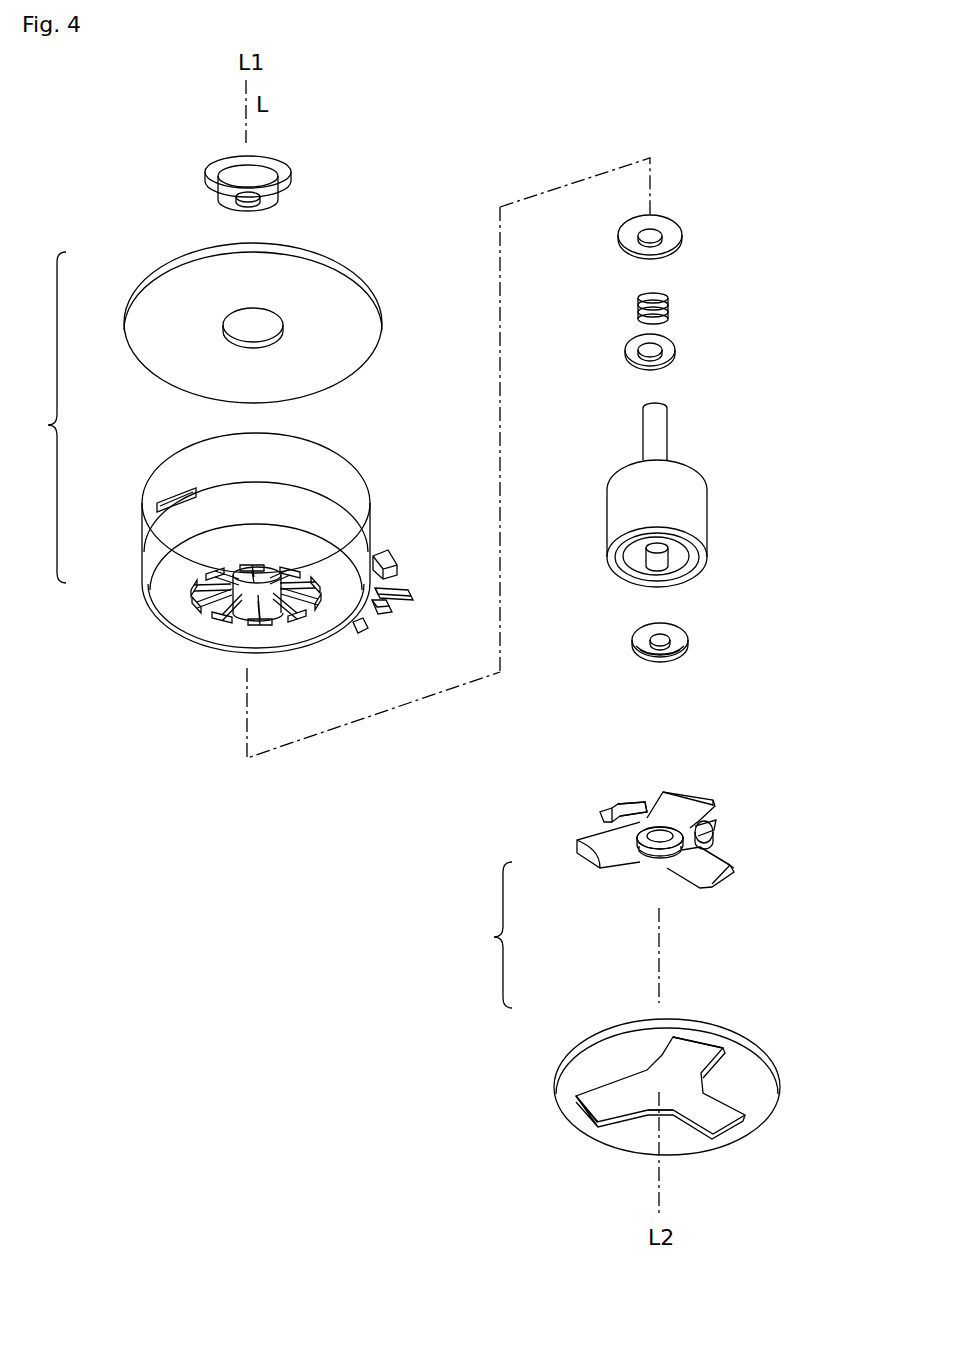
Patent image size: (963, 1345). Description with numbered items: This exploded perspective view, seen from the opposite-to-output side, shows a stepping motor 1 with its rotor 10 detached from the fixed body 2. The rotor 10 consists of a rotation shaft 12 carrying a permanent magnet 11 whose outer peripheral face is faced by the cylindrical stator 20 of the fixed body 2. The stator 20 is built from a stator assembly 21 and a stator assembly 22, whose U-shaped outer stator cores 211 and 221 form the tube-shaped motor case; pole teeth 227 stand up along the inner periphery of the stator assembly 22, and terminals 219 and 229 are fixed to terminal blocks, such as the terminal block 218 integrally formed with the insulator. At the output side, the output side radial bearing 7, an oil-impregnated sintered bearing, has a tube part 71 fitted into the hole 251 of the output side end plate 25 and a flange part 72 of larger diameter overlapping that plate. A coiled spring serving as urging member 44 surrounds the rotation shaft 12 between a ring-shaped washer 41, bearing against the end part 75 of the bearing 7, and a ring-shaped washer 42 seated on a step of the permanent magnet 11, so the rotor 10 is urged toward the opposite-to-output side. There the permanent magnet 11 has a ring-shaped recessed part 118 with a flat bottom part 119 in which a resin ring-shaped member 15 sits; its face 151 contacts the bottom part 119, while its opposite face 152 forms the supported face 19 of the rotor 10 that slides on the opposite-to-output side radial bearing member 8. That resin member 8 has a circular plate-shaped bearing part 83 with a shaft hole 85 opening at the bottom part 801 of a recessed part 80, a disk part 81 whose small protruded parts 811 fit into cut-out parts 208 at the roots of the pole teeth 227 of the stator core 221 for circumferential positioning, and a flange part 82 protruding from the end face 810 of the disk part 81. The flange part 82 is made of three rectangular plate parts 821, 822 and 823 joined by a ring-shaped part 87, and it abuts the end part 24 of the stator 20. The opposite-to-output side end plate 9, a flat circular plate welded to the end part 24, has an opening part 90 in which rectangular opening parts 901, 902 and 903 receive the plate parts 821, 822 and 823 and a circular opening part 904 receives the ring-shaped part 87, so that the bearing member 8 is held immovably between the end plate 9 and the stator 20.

The stepping motor 1 is at (658, 126).
The fixed body 2 is at (270, 630).
The output side radial bearing 7 is at (198, 205).
The flange part 72 is at (222, 168).
The tube part 71 is at (275, 180).
The end part 75 is at (266, 205).
The output side end plate 25 is at (221, 340).
The hole 251 is at (230, 342).
The stator 20 is at (266, 557).
The stator assembly 21 is at (233, 493).
The stator assembly 22 is at (285, 592).
The stator core 211 is at (300, 472).
The stator core 221 is at (335, 522).
The terminal block 218 is at (392, 556).
The terminal 219 is at (413, 597).
The terminal 229 is at (381, 614).
The end part 24 is at (168, 592).
The pole teeth 227 is at (245, 608).
The cut-out part 208 is at (278, 630).
The ring-shaped washer 41 is at (684, 234).
The urging member 44 is at (670, 306).
The ring-shaped washer 42 is at (678, 350).
The rotor 10 is at (680, 554).
The rotation shaft 12 is at (668, 420).
The permanent magnet 11 is at (662, 551).
The ring-shaped recessed part 118 is at (640, 573).
The bottom part 119 is at (636, 556).
The ring-shaped member 15 is at (702, 645).
The face 151 is at (672, 627).
The face 152 is at (676, 656).
The supported face 19 is at (660, 650).
The opposite-to-output side radial bearing member 8 is at (648, 846).
The recessed part 80 is at (663, 846).
The disk part 81 is at (601, 782).
The end face 810 is at (642, 806).
The protruded part 811 is at (630, 806).
The shaft hole 85 is at (662, 832).
The rectangular plate part 822 is at (712, 805).
The flange part 82 is at (702, 826).
The ring-shaped part 87 is at (710, 840).
The rectangular plate part 823 is at (600, 866).
The rectangular plate part 821 is at (716, 874).
The bearing part 83 is at (636, 856).
The bottom part 801 is at (695, 810).
The opposite-to-output side end plate 9 is at (661, 1086).
The opening part 90 is at (663, 1086).
The rectangular opening part 902 is at (693, 1040).
The rectangular opening part 903 is at (580, 1103).
The rectangular opening part 901 is at (735, 1120).
The circular opening part 904 is at (652, 1118).